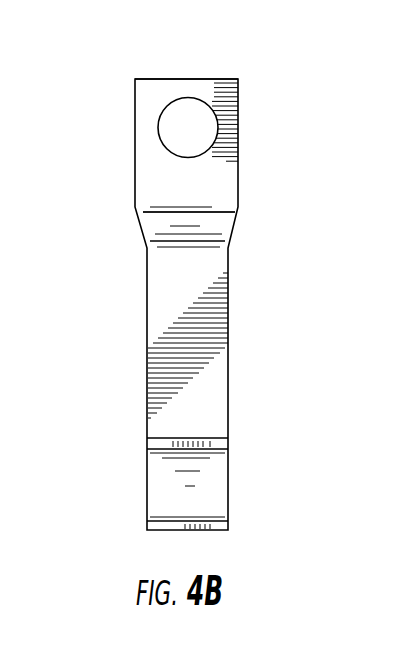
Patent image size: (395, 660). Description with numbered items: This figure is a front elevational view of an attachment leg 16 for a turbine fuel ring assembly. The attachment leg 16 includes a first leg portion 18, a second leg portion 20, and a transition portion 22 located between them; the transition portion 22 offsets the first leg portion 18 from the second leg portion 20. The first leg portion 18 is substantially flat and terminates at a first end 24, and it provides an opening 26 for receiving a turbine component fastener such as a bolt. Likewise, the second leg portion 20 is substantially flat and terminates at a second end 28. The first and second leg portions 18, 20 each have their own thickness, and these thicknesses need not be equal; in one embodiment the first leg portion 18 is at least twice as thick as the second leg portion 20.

The attachment leg 16 is at (283, 161).
The first leg portion 18 is at (211, 192).
The second leg portion 20 is at (208, 404).
The transition portion 22 is at (219, 228).
The first end 24 is at (183, 78).
The opening 26 is at (177, 127).
The second end 28 is at (203, 530).